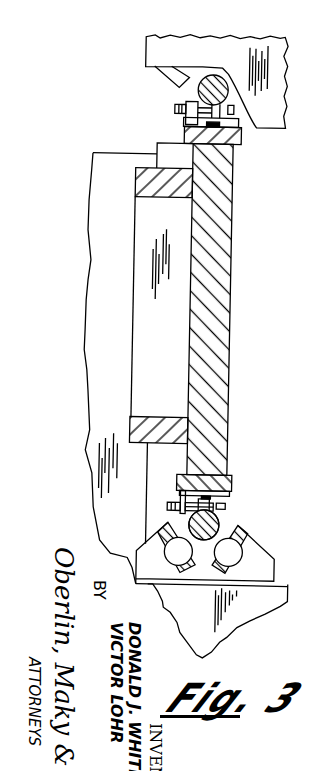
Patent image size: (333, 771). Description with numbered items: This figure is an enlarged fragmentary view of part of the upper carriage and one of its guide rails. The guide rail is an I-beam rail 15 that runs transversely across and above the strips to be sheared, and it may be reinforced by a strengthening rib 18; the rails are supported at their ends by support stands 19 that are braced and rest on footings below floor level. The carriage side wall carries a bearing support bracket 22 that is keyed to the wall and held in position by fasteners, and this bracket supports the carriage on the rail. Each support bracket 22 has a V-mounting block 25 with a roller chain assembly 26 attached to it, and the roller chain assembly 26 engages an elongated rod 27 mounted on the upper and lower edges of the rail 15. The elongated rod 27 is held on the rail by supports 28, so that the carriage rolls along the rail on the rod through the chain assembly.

The I-beam rail 15 is at (220, 288).
The strengthening rib 18 is at (140, 176).
The support stand 19 is at (95, 278).
The bearing support bracket 22 is at (275, 79).
The V-mounting block 25 is at (258, 550).
The roller chain assembly 26 is at (229, 538).
The elongated rod 27 is at (220, 517).
The support 28 is at (231, 482).